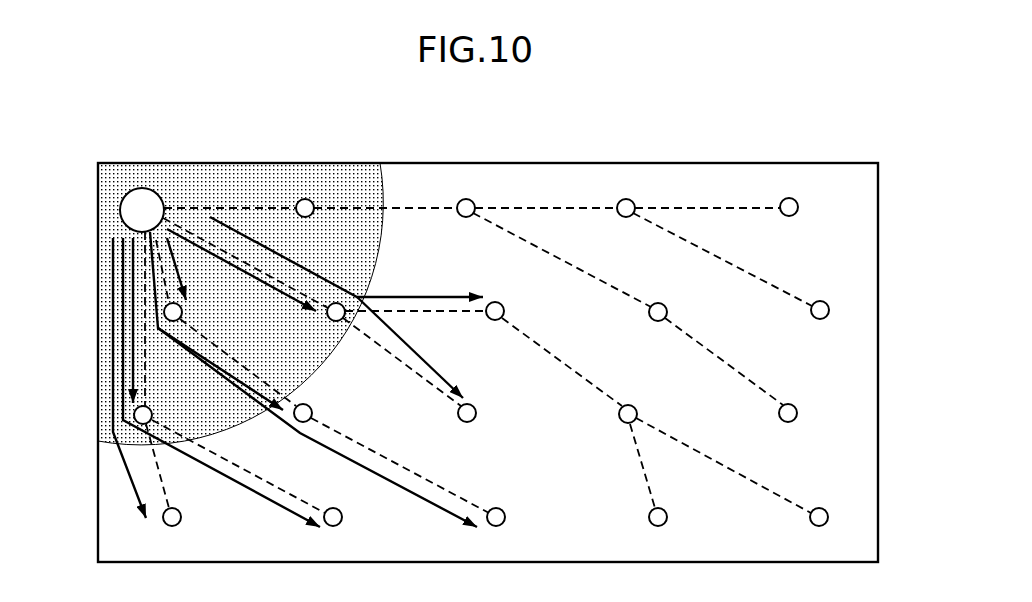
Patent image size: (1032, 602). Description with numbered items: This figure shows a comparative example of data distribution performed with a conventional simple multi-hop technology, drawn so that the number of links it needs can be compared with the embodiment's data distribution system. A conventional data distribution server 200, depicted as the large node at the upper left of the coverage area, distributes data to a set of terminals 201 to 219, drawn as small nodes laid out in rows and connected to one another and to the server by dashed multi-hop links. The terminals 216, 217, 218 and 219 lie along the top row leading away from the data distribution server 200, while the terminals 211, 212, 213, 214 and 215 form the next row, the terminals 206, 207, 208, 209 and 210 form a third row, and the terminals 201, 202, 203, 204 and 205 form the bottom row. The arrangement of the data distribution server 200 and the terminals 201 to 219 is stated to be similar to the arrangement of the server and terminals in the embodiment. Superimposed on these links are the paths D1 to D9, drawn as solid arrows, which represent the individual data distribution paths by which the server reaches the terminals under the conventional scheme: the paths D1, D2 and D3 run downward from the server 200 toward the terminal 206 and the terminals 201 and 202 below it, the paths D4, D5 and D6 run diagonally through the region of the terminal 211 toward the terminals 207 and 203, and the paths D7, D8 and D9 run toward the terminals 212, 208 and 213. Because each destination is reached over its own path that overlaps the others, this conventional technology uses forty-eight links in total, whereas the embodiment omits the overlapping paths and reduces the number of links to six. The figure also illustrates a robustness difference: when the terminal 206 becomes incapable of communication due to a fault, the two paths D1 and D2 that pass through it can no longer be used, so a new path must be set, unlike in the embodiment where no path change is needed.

The data distribution server 200 is at (142, 188).
The terminal 201 is at (181, 519).
The terminal 202 is at (342, 519).
The terminal 203 is at (505, 519).
The terminal 204 is at (667, 519).
The terminal 205 is at (810, 519).
The terminal 206 is at (152, 417).
The terminal 207 is at (312, 413).
The terminal 208 is at (467, 422).
The terminal 209 is at (628, 405).
The terminal 210 is at (788, 422).
The terminal 211 is at (182, 314).
The terminal 212 is at (343, 320).
The terminal 213 is at (496, 302).
The terminal 214 is at (658, 303).
The terminal 215 is at (820, 319).
The terminal 216 is at (305, 199).
The terminal 217 is at (466, 217).
The terminal 218 is at (626, 217).
The terminal 219 is at (798, 207).
The data distribution path D1 is at (113, 326).
The data distribution path D2 is at (123, 356).
The data distribution path D3 is at (133, 386).
The data distribution path D4 is at (323, 451).
The data distribution path D5 is at (268, 419).
The data distribution path D6 is at (193, 278).
The data distribution path D7 is at (267, 290).
The data distribution path D8 is at (430, 364).
The data distribution path D9 is at (412, 295).